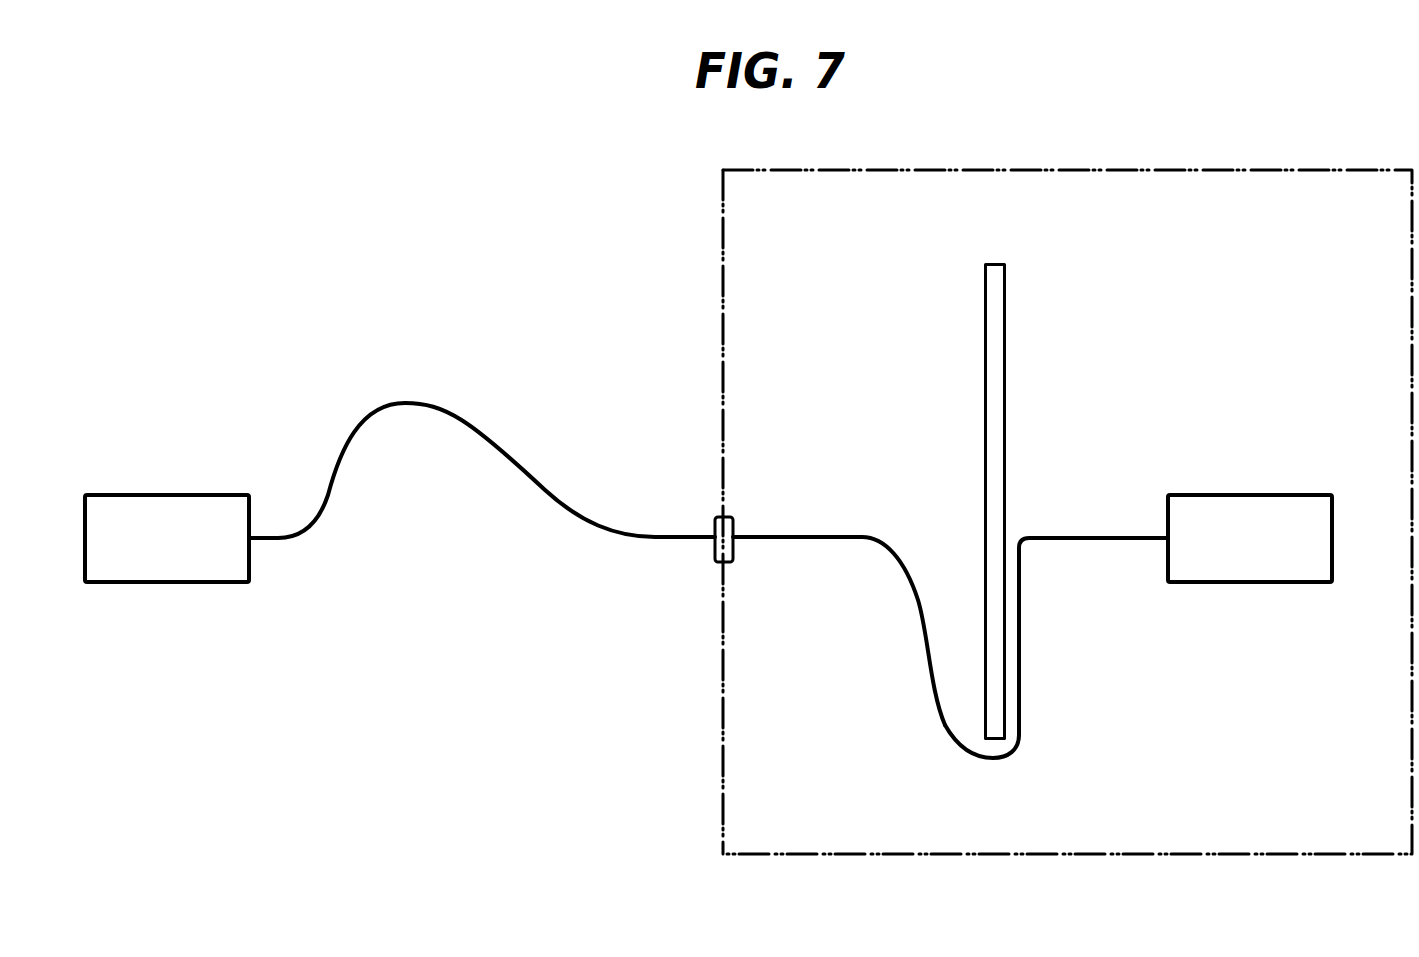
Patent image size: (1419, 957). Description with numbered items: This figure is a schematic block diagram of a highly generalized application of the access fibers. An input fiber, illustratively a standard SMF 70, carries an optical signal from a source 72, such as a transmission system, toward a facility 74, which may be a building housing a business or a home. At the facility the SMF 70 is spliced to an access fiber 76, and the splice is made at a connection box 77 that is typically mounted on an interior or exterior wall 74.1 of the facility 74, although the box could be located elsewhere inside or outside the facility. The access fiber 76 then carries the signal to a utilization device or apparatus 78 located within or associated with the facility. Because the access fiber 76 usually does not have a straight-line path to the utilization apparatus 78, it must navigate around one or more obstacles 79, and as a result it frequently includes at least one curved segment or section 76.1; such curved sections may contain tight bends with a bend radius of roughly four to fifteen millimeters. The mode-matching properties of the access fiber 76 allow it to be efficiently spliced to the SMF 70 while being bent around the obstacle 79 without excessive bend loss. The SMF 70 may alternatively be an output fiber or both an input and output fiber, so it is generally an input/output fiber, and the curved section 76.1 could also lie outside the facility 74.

The standard single-mode fiber (SMF) 70 is at (545, 488).
The source 72 is at (117, 491).
The facility 74 is at (1360, 168).
The wall 74.1 is at (724, 322).
The access fiber 76 is at (885, 545).
The curved segment or section 76.1 is at (1022, 758).
The connection box 77 is at (735, 548).
The utilization device or apparatus 78 is at (1275, 492).
The obstacle 79 is at (1007, 290).